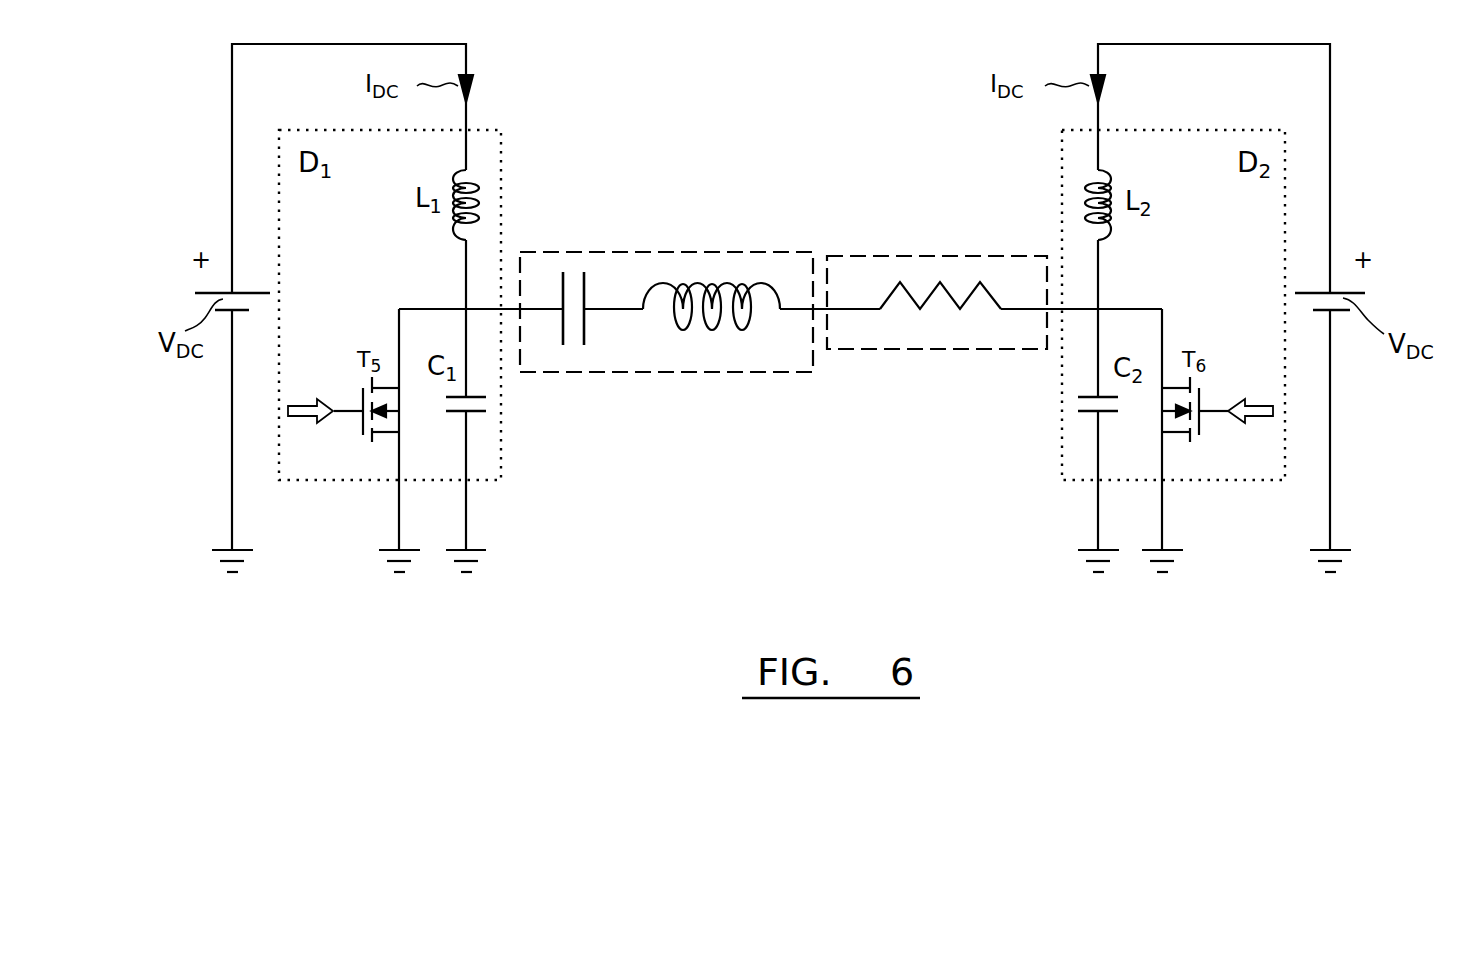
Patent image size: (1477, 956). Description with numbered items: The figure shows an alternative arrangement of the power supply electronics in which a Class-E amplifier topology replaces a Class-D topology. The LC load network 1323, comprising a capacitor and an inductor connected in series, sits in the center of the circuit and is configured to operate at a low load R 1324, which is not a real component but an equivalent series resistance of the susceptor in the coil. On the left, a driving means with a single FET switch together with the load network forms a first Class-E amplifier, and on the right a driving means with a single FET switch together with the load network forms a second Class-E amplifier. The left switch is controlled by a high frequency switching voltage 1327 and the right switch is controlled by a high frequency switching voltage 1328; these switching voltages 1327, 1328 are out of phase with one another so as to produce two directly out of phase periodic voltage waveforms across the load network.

The LC load network 1323 is at (668, 251).
The load R 1324 is at (938, 256).
The high frequency switching voltage 1327 is at (288, 410).
The high frequency switching voltage 1328 is at (1273, 411).